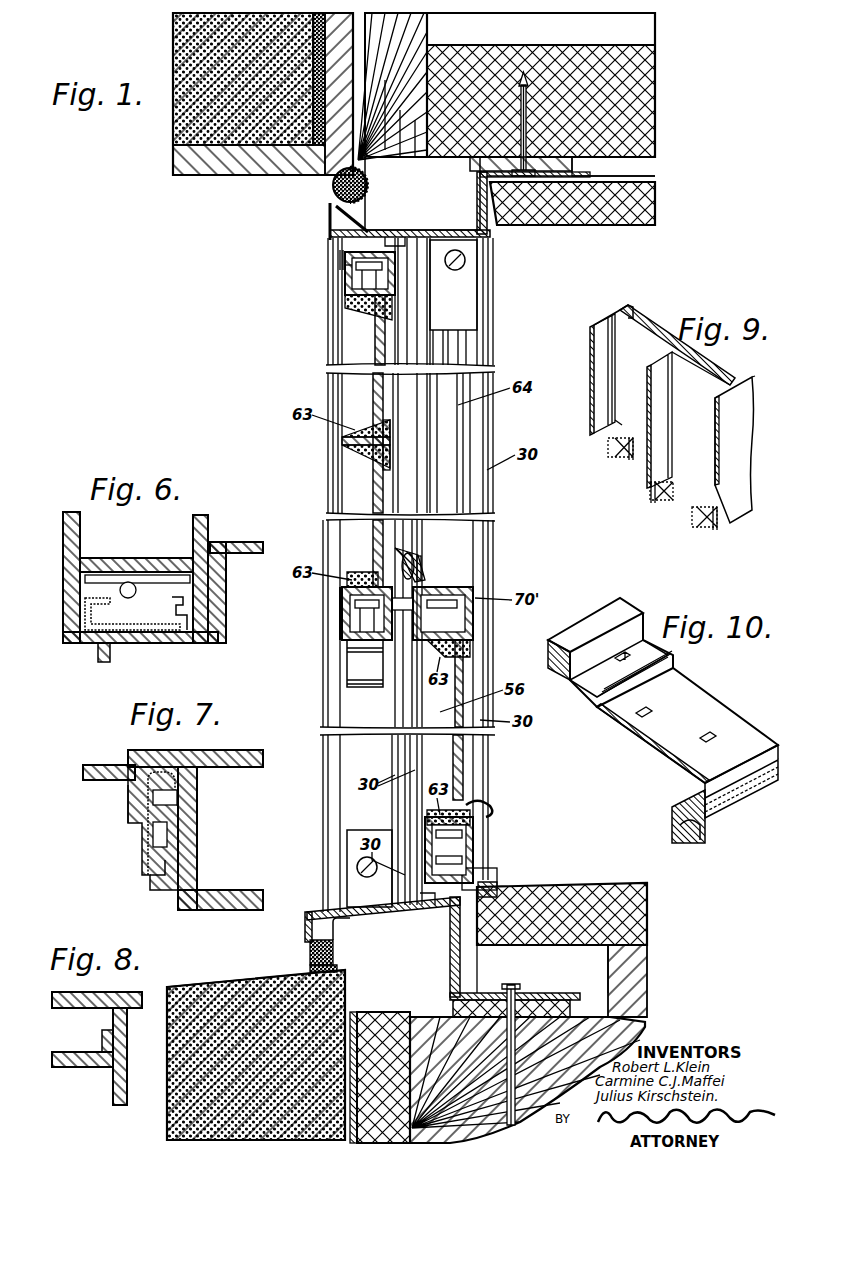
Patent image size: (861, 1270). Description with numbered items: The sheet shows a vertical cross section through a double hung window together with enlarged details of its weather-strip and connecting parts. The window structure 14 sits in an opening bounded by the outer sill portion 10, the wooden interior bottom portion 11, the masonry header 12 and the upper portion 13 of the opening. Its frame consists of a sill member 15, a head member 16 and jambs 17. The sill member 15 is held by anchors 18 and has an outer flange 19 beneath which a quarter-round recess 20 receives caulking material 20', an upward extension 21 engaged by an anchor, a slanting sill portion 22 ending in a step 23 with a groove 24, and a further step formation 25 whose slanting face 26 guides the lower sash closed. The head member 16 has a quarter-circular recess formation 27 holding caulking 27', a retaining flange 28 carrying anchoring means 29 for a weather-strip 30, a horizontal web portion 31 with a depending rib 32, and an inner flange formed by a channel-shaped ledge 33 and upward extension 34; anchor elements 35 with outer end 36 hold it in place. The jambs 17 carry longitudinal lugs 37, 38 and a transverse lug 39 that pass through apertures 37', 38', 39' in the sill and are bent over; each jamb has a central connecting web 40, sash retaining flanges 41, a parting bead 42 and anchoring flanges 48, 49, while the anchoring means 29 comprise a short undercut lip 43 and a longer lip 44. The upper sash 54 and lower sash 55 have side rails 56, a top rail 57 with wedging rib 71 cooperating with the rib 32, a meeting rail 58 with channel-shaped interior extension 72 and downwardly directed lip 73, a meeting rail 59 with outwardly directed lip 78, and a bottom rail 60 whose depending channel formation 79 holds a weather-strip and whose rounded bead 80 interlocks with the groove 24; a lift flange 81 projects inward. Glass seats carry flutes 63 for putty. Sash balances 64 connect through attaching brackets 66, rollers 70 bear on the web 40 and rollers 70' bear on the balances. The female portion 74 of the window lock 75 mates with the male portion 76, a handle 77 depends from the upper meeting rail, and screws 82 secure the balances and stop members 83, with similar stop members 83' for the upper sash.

In FIG. 1, the outer sill portion 10 is at (237, 982).
In FIG. 1, the interior bottom portion 11 is at (660, 966).
In FIG. 1, the masonry header 12 is at (295, 165).
In FIG. 1, the upper portion of the window opening 13 is at (655, 122).
In FIG. 1, the window structure 14 is at (317, 438).
In FIG. 1, the sill member 15 is at (300, 923).
In FIG. 1, the head member 16 is at (321, 218).
In FIG. 1, the jambs 17 is at (504, 309).
In FIG. 9, the jambs 17 is at (654, 325).
In FIG. 1, the anchors 18 is at (448, 940).
In FIG. 10, the outer flange 19 is at (725, 795).
In FIG. 1, the quarter-round recess 20 is at (499, 892).
In FIG. 1, the caulking material 20' is at (301, 963).
In FIG. 1, the upward extension 21 is at (338, 938).
In FIG. 1, the sill portion 22 is at (355, 910).
In FIG. 6, the step 23 is at (152, 645).
In FIG. 1, the groove 24 is at (500, 890).
In FIG. 6, the step formation 25 is at (248, 555).
In FIG. 6, the slanting face 26 is at (210, 547).
In FIG. 1, the quarter-circular recess formation 27 is at (394, 102).
In FIG. 1, the caulking 27' is at (371, 181).
In FIG. 1, the retaining flange 28 is at (322, 247).
In FIG. 1, the anchoring means 29 is at (345, 268).
In FIG. 7, the anchoring means 29 is at (184, 834).
In FIG. 1, the weather-strip 30 is at (340, 255).
In FIG. 6, the weather-strip 30 is at (82, 600).
In FIG. 7, the weather-strip 30 is at (176, 763).
In FIG. 1, the horizontal web portion 31 is at (410, 234).
In FIG. 8, the horizontal web portion 31 is at (100, 995).
In FIG. 1, the rib 32 is at (400, 238).
In FIG. 8, the rib 32 is at (126, 1040).
In FIG. 1, the channel-shaped ledge 33 is at (490, 238).
In FIG. 1, the upward extension 34 is at (500, 225).
In FIG. 1, the anchor elements 35 is at (448, 232).
In FIG. 1, the outer end 36 is at (362, 228).
In FIG. 9, the longitudinal lug 37 is at (620, 463).
In FIG. 10, the aperture 37' is at (657, 654).
In FIG. 9, the longitudinal lug 38 is at (720, 530).
In FIG. 10, the aperture 38' is at (715, 726).
In FIG. 9, the transverse lug 39 is at (658, 510).
In FIG. 10, the aperture 39' is at (658, 722).
In FIG. 9, the central connecting web 40 is at (715, 377).
In FIG. 1, the sash retaining flanges 41 is at (326, 767).
In FIG. 9, the sash retaining flanges 41 is at (590, 400).
In FIG. 1, the parting bead 42 is at (405, 805).
In FIG. 9, the parting bead 42 is at (650, 400).
In FIG. 7, the short undercut lip 43 is at (150, 870).
In FIG. 7, the longer lip 44 is at (168, 800).
In FIG. 9, the anchoring flange 48 is at (752, 397).
In FIG. 9, the anchoring flange 49 is at (622, 305).
In FIG. 1, the upper sash 54 is at (345, 302).
In FIG. 1, the lower sash 55 is at (472, 642).
In FIG. 6, the lower sash 55 is at (56, 563).
In FIG. 1, the side rails 56 is at (355, 393).
In FIG. 1, the top rail 57 is at (345, 288).
In FIG. 8, the top rail 57 is at (62, 1067).
In FIG. 1, the meeting rail 58 is at (334, 620).
In FIG. 7, the meeting rail 58 is at (79, 765).
In FIG. 1, the meeting rail 59 is at (473, 590).
In FIG. 7, the meeting rail 59 is at (249, 754).
In FIG. 1, the bottom rail 60 is at (440, 860).
In FIG. 1, the flute 63 is at (355, 312).
In FIG. 1, the sash balances 64 is at (321, 237).
In FIG. 1, the attaching brackets 66 is at (470, 870).
In FIG. 1, the rollers 70 is at (417, 710).
In FIG. 1, the rollers 70' is at (331, 277).
In FIG. 1, the wedging rib 71 is at (362, 316).
In FIG. 8, the wedging rib 71 is at (103, 1040).
In FIG. 1, the channel-shaped interior extension 72 is at (352, 630).
In FIG. 7, the channel-shaped interior extension 72 is at (110, 776).
In FIG. 1, the downwardly directed lip 73 is at (350, 607).
In FIG. 7, the downwardly directed lip 73 is at (130, 805).
In FIG. 1, the female portion 74 is at (400, 560).
In FIG. 1, the window lock 75 is at (427, 575).
In FIG. 1, the male portion 76 is at (420, 553).
In FIG. 1, the handle 77 is at (360, 677).
In FIG. 1, the outwardly directed lip 78 is at (432, 585).
In FIG. 7, the outwardly directed lip 78 is at (140, 760).
In FIG. 1, the depending channel formation 79 is at (420, 905).
In FIG. 6, the rounded bead 80 is at (205, 631).
In FIG. 1, the lift flange 81 is at (482, 808).
In FIG. 1, the screws 82 is at (375, 262).
In FIG. 1, the stop members 83 is at (490, 289).
In FIG. 1, the stop members 83' is at (340, 868).